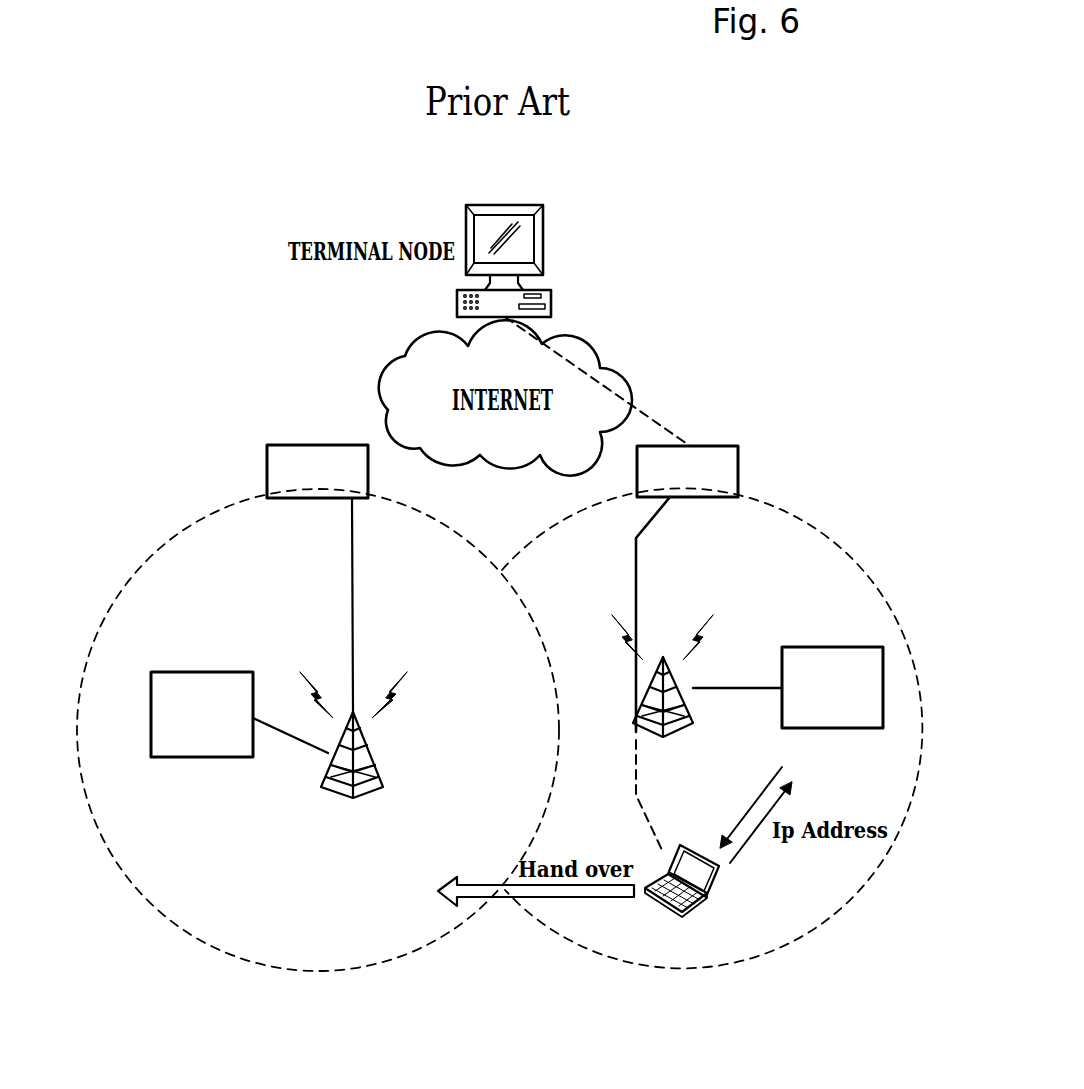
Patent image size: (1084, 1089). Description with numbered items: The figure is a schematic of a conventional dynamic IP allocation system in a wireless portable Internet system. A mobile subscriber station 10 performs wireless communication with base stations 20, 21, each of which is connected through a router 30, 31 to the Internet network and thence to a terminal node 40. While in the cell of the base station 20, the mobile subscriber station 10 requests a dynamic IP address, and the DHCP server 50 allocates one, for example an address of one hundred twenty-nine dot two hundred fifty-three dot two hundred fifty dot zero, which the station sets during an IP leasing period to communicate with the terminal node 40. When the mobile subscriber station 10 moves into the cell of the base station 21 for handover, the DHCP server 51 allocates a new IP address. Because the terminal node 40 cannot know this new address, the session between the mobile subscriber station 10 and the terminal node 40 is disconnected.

The mobile subscriber station 10 is at (715, 883).
The base station 20 is at (634, 718).
The base station 21 is at (372, 798).
The router 30 is at (739, 470).
The router 31 is at (267, 463).
The terminal node 40 is at (543, 238).
The DHCP server 50 is at (835, 647).
The DHCP server 51 is at (151, 712).